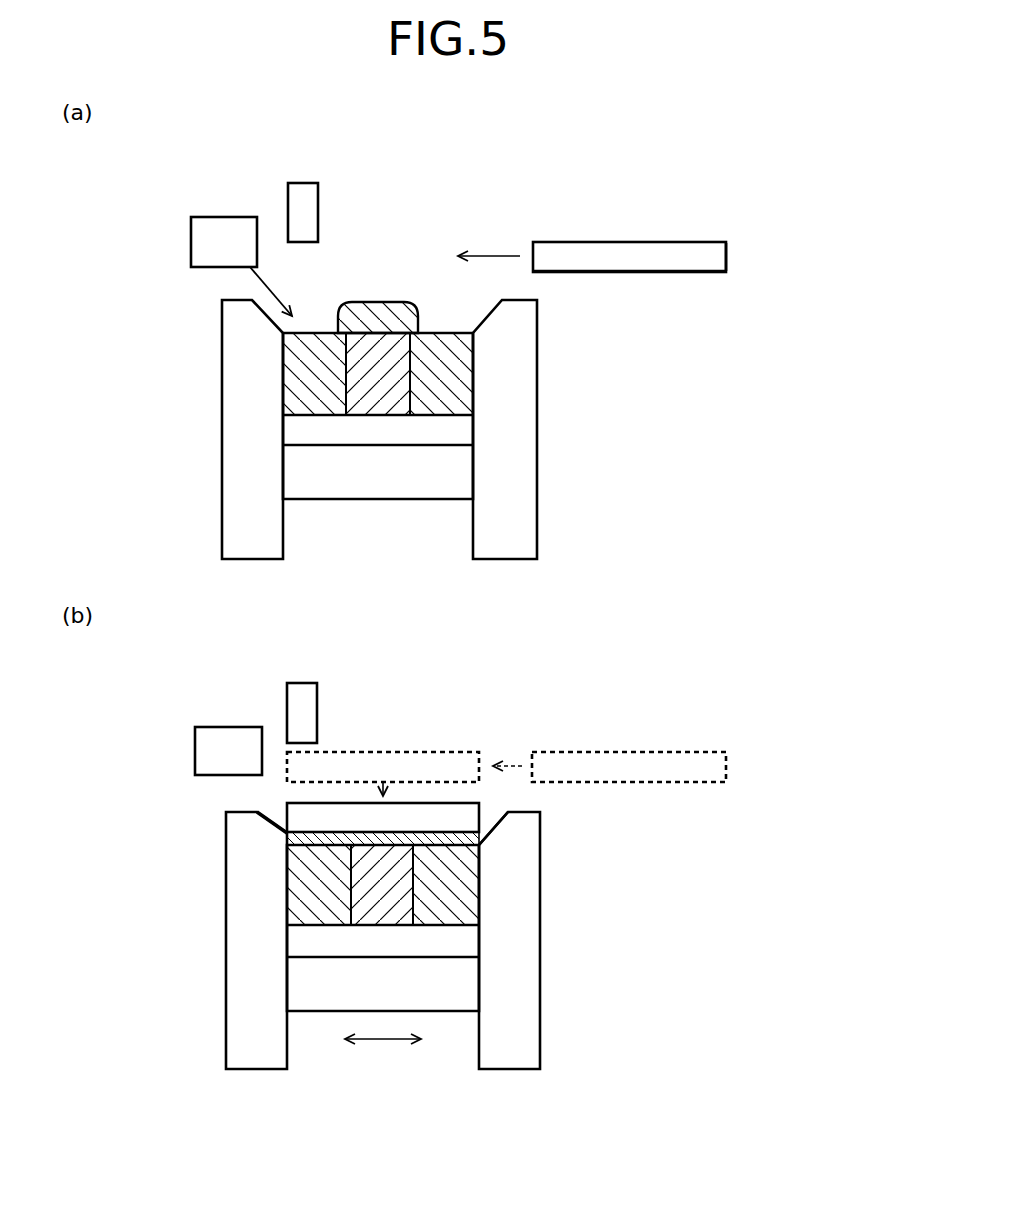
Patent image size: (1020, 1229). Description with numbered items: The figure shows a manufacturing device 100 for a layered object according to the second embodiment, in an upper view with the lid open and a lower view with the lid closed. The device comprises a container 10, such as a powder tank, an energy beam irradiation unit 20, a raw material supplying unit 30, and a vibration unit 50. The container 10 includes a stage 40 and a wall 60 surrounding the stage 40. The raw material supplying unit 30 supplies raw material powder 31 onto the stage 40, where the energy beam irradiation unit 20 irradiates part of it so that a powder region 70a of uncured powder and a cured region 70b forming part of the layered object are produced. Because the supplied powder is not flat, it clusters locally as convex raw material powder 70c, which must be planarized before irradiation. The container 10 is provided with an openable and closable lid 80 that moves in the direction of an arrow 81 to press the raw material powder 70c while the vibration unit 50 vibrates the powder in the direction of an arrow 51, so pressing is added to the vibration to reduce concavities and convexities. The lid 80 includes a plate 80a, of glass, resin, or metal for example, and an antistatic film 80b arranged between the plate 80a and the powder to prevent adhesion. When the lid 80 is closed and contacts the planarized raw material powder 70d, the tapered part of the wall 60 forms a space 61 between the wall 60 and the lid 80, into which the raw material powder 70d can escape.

The manufacturing device 100 is at (478, 181).
The container 10 is at (546, 312).
The energy beam irradiation unit 20 is at (300, 181).
The raw material supplying unit 30 is at (190, 240).
The raw material powder 31 is at (275, 290).
The stage 40 is at (457, 432).
The vibration unit 50 is at (373, 490).
The arrow 51 is at (382, 1042).
The wall 60 is at (238, 468).
The space 61 is at (282, 833).
The powder region 70a is at (307, 360).
The cured region 70b is at (380, 383).
The convex raw material powder 70c is at (377, 307).
The raw material powder 70d is at (313, 838).
The lid 80 is at (627, 250).
The plate 80a is at (728, 253).
The antistatic film 80b is at (690, 274).
The arrow 81 is at (489, 251).